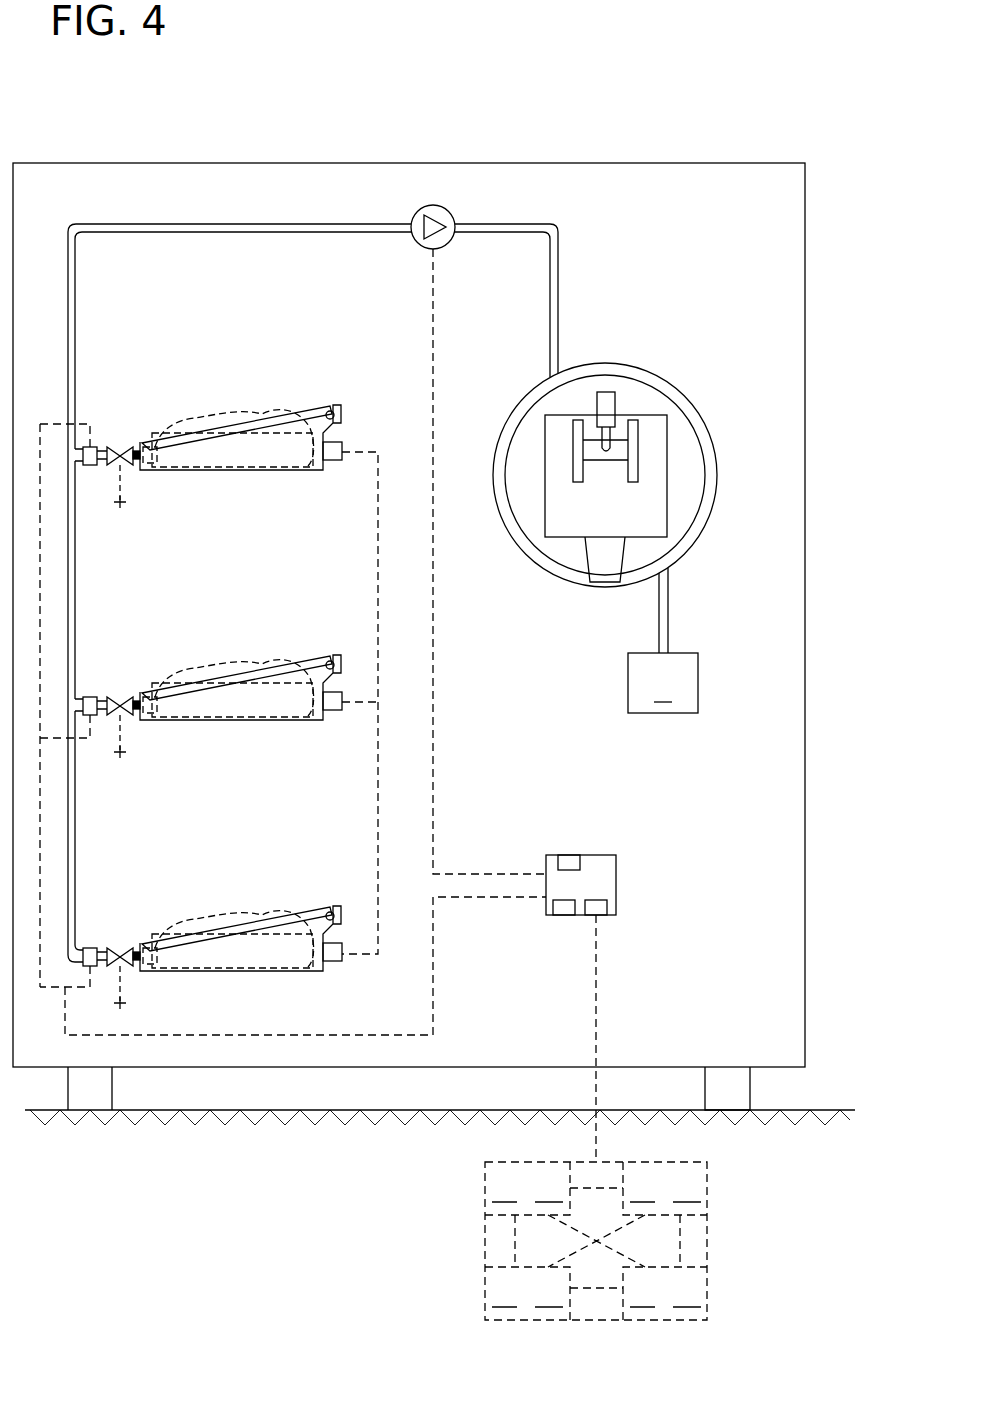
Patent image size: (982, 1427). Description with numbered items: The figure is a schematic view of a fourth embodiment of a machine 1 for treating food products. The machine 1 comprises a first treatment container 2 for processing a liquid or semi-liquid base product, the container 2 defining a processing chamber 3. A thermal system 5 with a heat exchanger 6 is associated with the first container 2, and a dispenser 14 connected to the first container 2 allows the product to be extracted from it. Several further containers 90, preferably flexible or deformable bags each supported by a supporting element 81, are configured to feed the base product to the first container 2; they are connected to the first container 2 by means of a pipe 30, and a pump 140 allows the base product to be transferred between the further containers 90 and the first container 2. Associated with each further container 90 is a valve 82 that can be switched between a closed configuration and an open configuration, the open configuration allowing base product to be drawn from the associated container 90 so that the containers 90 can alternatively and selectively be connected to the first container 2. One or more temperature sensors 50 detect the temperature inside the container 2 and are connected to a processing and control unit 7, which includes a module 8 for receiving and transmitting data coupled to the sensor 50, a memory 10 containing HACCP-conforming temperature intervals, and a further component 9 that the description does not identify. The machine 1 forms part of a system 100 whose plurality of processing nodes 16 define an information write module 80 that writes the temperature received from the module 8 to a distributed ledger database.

The machine 1 is at (583, 132).
The first treatment container 2 is at (622, 436).
The processing chamber 3 is at (688, 383).
The thermal system 5 is at (593, 640).
The heat exchanger 6 is at (522, 570).
The processing and control unit 7 is at (603, 873).
The module for receiving and transmitting data 8 is at (602, 906).
The processor 9 is at (571, 854).
The memory 10 is at (563, 916).
The dispenser 14 is at (680, 475).
The processing nodes 16 is at (577, 1242).
The pipe 30 is at (495, 215).
The temperature sensor 50 is at (97, 440).
The information write module 80 is at (618, 1242).
The supporting element 81 is at (222, 473).
The valve 82 is at (126, 465).
The further container 90 is at (208, 420).
The system 100 is at (671, 1241).
The pump 140 is at (417, 252).